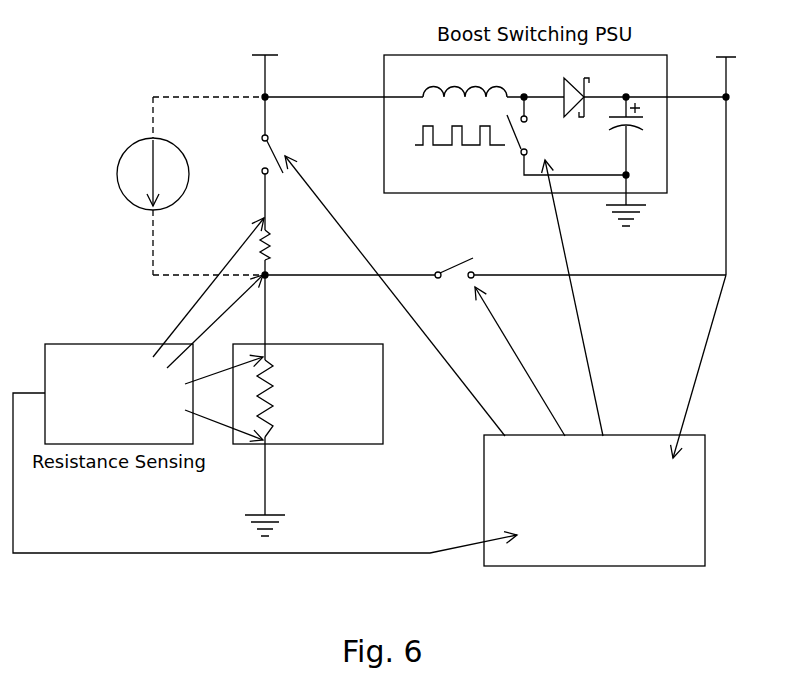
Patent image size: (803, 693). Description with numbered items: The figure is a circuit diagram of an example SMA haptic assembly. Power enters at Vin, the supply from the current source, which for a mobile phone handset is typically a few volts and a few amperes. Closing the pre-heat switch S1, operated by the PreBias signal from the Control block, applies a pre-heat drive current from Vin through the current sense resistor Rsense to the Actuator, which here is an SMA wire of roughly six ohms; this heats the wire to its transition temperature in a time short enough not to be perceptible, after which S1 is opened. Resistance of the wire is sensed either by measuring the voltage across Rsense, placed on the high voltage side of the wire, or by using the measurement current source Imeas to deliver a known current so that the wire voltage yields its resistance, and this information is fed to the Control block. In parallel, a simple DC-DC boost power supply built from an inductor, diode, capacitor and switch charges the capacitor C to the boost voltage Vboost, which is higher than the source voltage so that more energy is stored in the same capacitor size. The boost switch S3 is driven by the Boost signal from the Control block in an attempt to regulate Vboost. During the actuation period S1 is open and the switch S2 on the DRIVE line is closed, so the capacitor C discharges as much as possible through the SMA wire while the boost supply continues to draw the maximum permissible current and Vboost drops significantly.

The power supply voltage Vin is at (263, 84).
The measurement current source Imeas is at (133, 165).
The pre-heat switch S1 is at (255, 154).
The pre-bias control signal PreBias is at (390, 280).
The current sense resistor Rsense is at (301, 245).
The boost switch S3 is at (531, 126).
The boost control signal Boost is at (567, 288).
The capacitor C is at (630, 136).
The boost voltage Vboost is at (714, 245).
The drive line DRIVE is at (476, 340).
The actuation switch S2 is at (500, 347).
The control block Control is at (594, 500).
The actuator Actuator is at (308, 380).